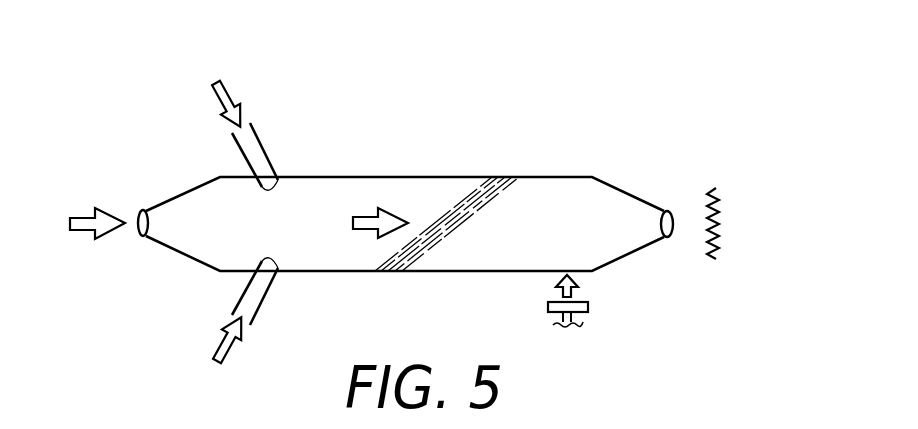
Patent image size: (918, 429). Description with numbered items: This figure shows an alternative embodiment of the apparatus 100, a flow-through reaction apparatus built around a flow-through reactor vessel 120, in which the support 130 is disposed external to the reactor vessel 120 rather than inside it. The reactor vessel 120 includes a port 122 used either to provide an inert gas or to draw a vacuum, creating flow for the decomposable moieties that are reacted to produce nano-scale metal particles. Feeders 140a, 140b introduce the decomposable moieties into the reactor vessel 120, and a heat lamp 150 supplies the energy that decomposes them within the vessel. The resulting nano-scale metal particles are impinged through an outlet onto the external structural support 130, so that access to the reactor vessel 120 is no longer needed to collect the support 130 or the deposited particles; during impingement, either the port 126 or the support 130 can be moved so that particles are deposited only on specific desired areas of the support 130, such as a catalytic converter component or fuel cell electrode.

The apparatus 100 is at (648, 113).
The flow-through reactor vessel 120 is at (515, 176).
The port 122 is at (141, 210).
The port 126 is at (668, 211).
The support 130 is at (720, 225).
The feeder 140a is at (266, 148).
The feeder 140b is at (266, 300).
The heat lamp 150 is at (589, 307).